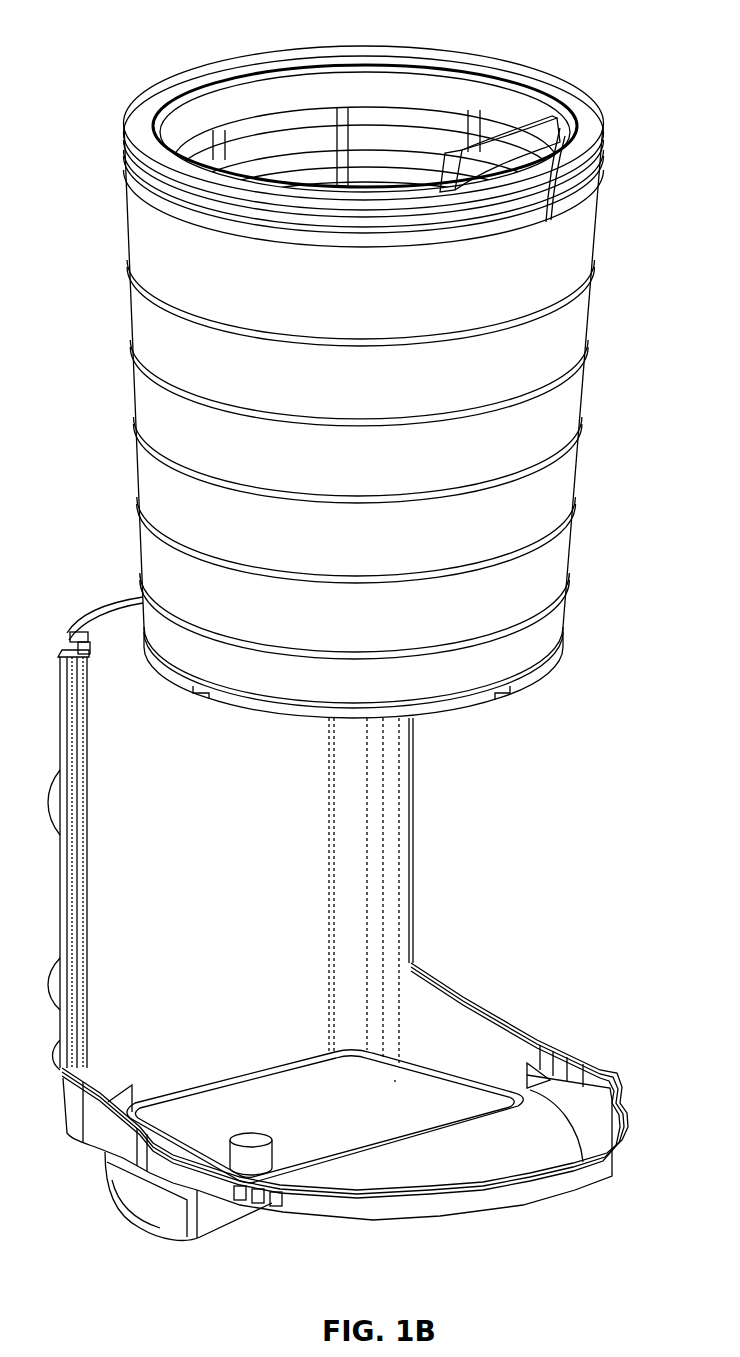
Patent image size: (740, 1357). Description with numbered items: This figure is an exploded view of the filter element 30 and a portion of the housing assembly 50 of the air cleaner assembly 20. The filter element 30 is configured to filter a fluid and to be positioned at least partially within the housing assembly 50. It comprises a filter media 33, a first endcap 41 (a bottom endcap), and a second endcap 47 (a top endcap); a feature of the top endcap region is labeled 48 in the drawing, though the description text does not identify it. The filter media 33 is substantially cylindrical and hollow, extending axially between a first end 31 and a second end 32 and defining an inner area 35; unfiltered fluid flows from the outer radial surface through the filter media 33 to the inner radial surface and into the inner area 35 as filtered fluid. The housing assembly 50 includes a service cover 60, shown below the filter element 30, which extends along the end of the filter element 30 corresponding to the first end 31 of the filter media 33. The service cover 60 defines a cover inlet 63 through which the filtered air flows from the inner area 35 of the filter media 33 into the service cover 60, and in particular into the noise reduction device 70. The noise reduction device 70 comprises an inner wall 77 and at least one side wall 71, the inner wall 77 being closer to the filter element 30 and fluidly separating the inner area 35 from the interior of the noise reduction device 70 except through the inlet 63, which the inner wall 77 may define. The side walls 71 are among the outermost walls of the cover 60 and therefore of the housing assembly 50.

The air cleaner assembly 20 is at (120, 60).
The filter element 30 is at (592, 397).
The first end 31 is at (537, 675).
The second end 32 is at (549, 216).
The filter media 33 is at (572, 328).
The inner area 35 is at (285, 138).
The first endcap 41 is at (450, 718).
The second endcap 47 is at (557, 83).
The inner rim 48 is at (418, 100).
The housing assembly 50 is at (522, 1018).
The service cover 60 is at (472, 990).
The cover inlet 63 is at (290, 1153).
The noise reduction device 70 is at (457, 1132).
The side wall 71 is at (133, 1207).
The inner wall 77 is at (392, 1085).